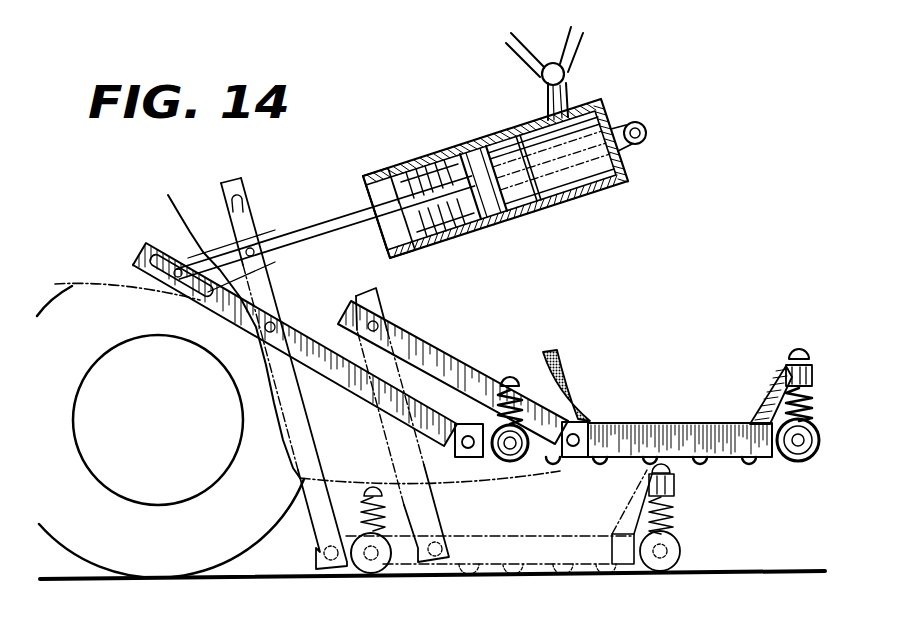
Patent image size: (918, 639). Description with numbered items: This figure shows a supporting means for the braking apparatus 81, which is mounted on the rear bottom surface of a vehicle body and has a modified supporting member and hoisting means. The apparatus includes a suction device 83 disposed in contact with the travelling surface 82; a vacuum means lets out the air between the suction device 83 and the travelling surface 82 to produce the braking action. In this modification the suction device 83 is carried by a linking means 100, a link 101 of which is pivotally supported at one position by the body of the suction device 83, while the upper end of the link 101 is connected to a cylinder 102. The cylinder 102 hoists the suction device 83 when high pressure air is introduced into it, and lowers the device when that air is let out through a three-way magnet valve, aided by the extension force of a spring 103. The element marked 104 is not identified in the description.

The braking apparatus 81 is at (654, 246).
The travelling surface 82 is at (766, 574).
The suction device 83 is at (688, 423).
The linking means 100 is at (336, 411).
The link 101 is at (185, 228).
The cylinder 102 is at (598, 191).
The spring 103 is at (409, 181).
The ball joint fitting 104 is at (565, 76).